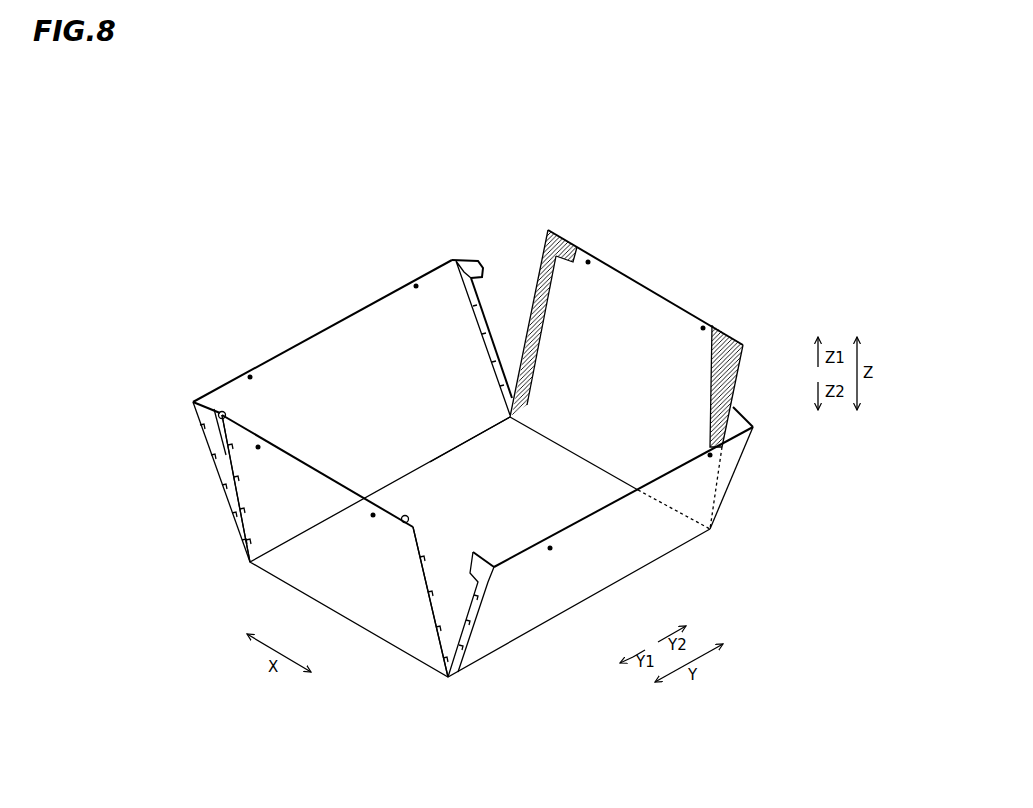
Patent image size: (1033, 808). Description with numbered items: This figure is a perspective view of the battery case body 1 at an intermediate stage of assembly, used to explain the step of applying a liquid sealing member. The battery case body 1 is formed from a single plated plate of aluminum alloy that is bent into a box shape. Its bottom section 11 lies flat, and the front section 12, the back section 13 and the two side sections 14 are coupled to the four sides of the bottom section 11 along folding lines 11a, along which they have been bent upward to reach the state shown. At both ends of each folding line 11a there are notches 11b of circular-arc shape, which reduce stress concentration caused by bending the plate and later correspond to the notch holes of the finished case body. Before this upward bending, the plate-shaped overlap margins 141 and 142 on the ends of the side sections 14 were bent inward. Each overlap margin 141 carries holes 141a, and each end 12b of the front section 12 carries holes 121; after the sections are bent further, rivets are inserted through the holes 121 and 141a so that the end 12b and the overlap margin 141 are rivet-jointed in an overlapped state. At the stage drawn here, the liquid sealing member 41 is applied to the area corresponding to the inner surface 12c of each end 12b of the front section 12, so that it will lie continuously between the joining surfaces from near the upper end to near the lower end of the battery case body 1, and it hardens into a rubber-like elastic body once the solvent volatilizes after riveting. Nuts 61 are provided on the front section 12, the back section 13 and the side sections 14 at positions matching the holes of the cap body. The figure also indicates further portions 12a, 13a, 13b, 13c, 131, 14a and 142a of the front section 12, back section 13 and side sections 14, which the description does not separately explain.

The battery case body 1 is at (759, 308).
The bottom section 11 is at (550, 617).
The folding lines 11a is at (430, 462).
The notches 11b is at (250, 565).
The front section 12 is at (297, 589).
The upper edge of side plate 12 12a is at (258, 446).
The ends of the front section 12b is at (243, 498).
The inner surface 12c is at (215, 417).
The holes 121 is at (213, 423).
The back section 13 is at (647, 280).
The upper edge of side plate 13 13a is at (590, 260).
The side edge of side plate 13 13b is at (540, 295).
The corner tab of side plate 13 13c is at (553, 237).
The engagement portion of side plate 13 131 is at (548, 243).
The side sections 14 is at (322, 328).
The upper edge of side plate 14 14a is at (416, 285).
The overlap margin 141 is at (200, 397).
The holes 141a is at (197, 418).
The overlap margins 142 is at (468, 257).
The engagement edge of side plate 14 142a is at (470, 262).
The liquid sealing member 41 is at (225, 416).
The nuts 61 is at (419, 287).